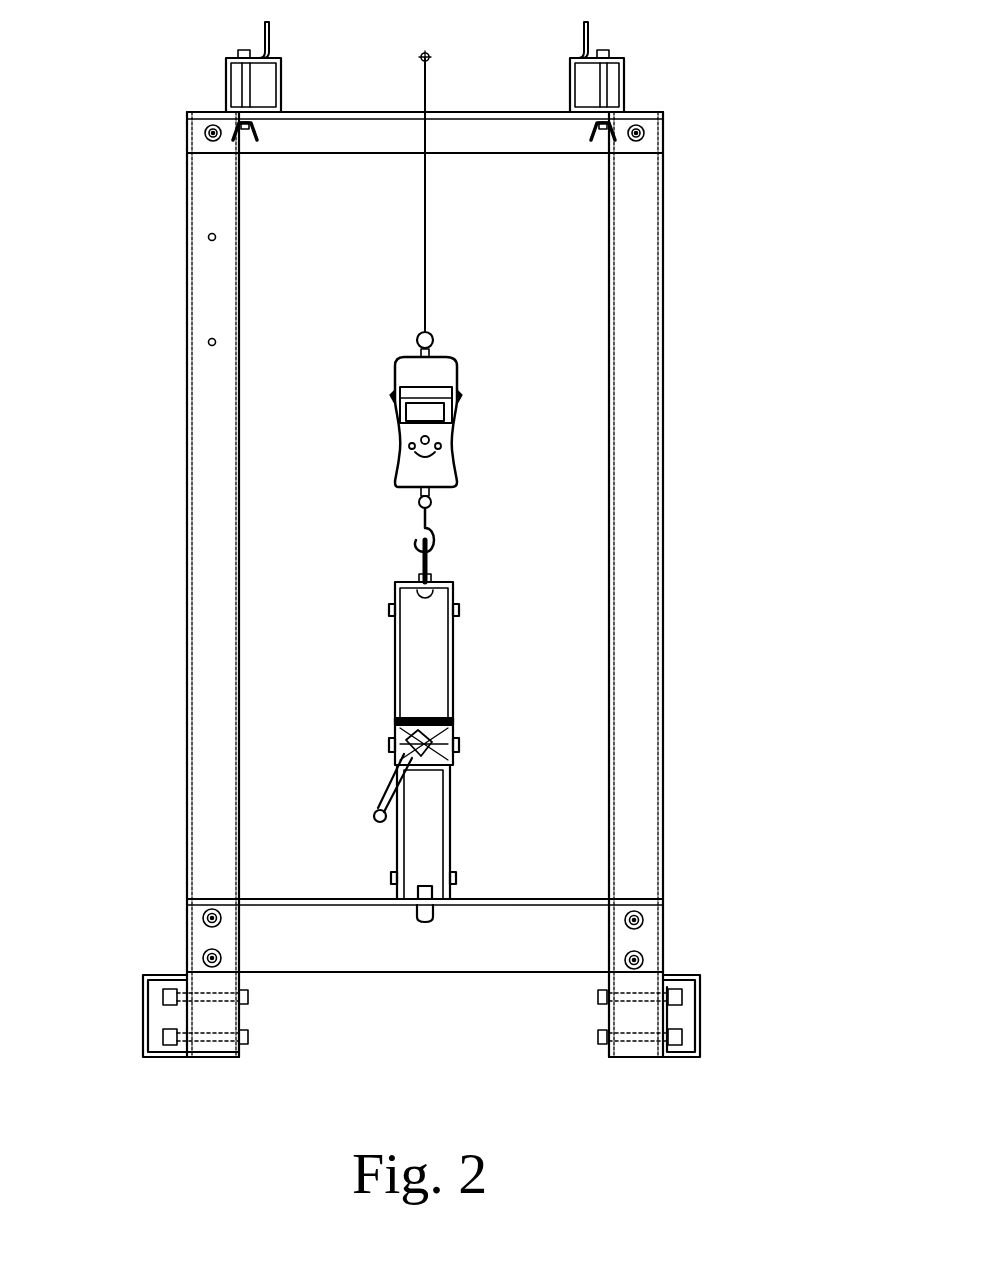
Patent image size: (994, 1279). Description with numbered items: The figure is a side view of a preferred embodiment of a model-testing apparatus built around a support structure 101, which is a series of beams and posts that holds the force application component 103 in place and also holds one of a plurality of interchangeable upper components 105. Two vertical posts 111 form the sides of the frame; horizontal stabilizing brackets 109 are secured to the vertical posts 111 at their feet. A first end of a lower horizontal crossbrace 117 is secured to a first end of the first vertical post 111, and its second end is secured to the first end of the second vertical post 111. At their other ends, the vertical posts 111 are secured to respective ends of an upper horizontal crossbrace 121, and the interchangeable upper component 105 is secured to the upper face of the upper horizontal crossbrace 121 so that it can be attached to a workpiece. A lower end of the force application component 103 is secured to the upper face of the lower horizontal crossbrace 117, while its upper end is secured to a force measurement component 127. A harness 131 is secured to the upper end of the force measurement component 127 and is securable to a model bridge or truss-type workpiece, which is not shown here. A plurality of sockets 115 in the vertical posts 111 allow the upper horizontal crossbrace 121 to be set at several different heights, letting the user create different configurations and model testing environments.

The support structure 101 is at (176, 578).
The force application component 103 is at (397, 762).
The interchangeable upper component 105 is at (226, 88).
The horizontal stabilizing bracket 109 is at (155, 978).
The vertical post 111 is at (662, 633).
The socket 115 is at (204, 342).
The lower horizontal crossbrace 117 is at (567, 900).
The upper horizontal crossbrace 121 is at (657, 130).
The force measurement component 127 is at (457, 440).
The harness 131 is at (433, 57).